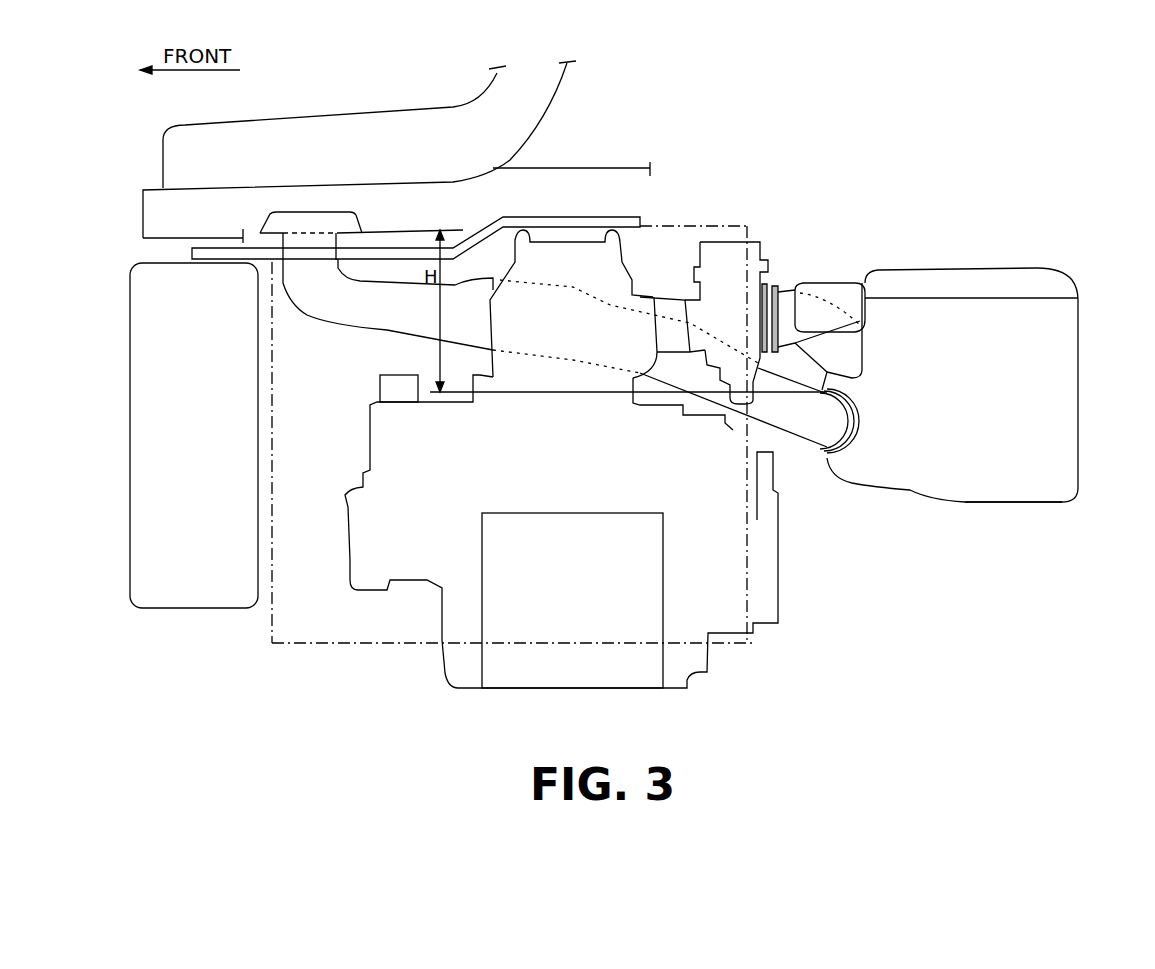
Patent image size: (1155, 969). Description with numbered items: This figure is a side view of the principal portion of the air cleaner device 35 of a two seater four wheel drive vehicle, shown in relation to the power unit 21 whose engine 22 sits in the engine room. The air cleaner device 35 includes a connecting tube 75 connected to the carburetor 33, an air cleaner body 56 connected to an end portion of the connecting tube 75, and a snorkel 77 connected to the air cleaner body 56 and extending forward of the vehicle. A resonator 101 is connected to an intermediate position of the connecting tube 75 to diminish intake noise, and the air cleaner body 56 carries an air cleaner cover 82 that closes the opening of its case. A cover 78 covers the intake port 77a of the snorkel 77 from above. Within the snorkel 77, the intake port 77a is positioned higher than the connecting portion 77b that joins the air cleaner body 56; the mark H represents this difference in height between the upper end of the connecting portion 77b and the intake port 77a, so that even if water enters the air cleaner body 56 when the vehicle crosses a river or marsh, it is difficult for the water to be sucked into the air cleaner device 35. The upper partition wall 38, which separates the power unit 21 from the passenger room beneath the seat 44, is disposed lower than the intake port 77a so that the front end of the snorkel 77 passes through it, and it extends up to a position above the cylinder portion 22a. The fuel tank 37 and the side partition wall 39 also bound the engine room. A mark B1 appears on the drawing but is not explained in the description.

The power unit 21 is at (709, 673).
The engine 22 is at (353, 544).
The cylinder portion 22a is at (631, 254).
The carburetor 33 is at (724, 245).
The air cleaner device 35 is at (926, 211).
The fuel tank 37 is at (188, 612).
The upper partition wall 38 is at (557, 215).
The side partition wall 39 is at (358, 645).
The seat 44 is at (343, 130).
The air cleaner body 56 is at (1013, 262).
The connecting tube 75 is at (781, 295).
The snorkel 77 is at (303, 305).
The intake port 77a is at (300, 230).
The connecting portion 77b is at (816, 453).
The cover 78 is at (350, 220).
The air cleaner cover 82 is at (975, 278).
The resonator 101 is at (828, 288).
The air cleaner bottom B1 is at (1007, 497).